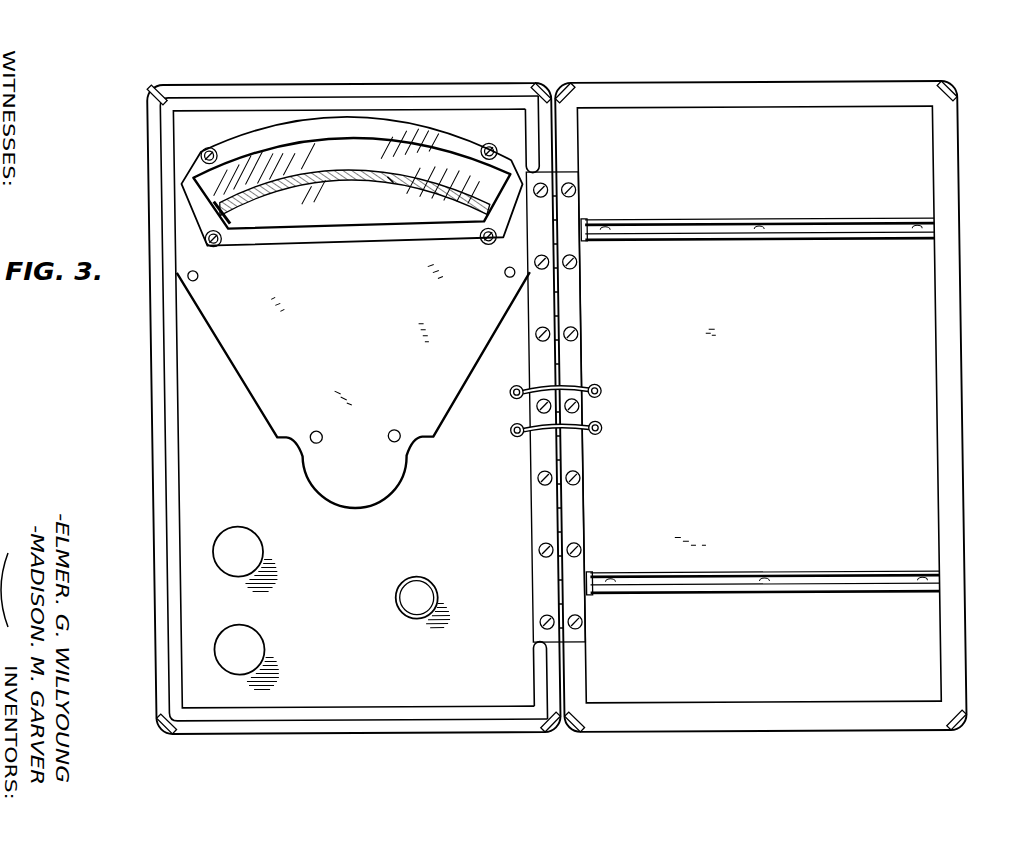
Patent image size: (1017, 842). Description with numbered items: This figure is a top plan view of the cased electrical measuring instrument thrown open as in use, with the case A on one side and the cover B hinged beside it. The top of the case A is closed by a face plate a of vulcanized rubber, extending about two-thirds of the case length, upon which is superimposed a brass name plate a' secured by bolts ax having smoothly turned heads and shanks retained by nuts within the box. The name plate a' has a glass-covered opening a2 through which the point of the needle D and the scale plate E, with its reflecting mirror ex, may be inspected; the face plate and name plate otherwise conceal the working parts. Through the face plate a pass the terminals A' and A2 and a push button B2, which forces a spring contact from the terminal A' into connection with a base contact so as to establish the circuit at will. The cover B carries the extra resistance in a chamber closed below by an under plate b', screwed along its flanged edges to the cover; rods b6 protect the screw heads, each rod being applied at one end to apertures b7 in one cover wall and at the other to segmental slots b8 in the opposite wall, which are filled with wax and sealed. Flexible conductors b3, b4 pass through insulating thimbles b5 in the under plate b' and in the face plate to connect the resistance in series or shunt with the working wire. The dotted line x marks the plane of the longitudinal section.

The case A is at (336, 408).
The face plate a is at (353, 408).
The name plate a' is at (355, 390).
The glass-covered opening a2 is at (351, 181).
The bolts ax is at (196, 278).
The terminal A' is at (260, 656).
The terminal A2 is at (253, 550).
The cover B is at (949, 331).
The under plate b' is at (759, 404).
The push button B2 is at (437, 595).
The flexible conductor b3 is at (578, 448).
The flexible conductor b4 is at (570, 384).
The insulating thimbles b5 is at (601, 397).
The rods b6 is at (796, 235).
The apertures b7 is at (580, 604).
The segmental slots b8 is at (583, 226).
The needle D is at (230, 223).
The scale plate E is at (395, 184).
The reflecting mirror ex is at (371, 199).
The section line x is at (523, 84).